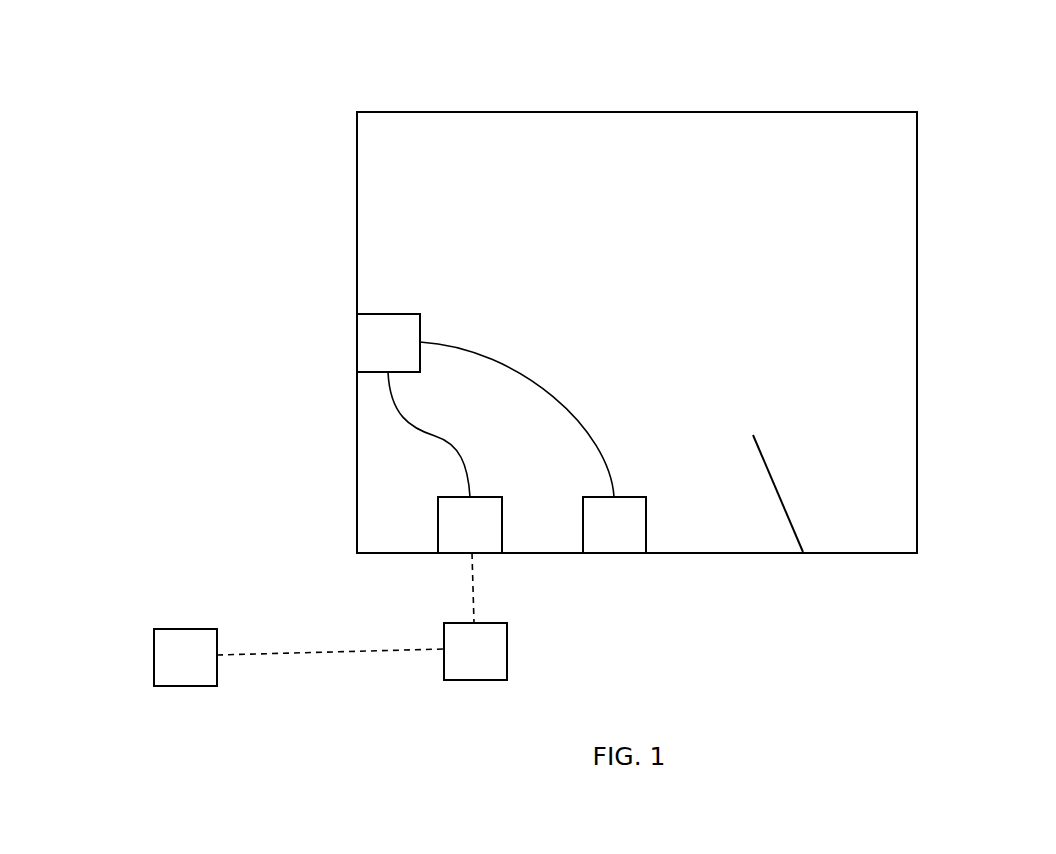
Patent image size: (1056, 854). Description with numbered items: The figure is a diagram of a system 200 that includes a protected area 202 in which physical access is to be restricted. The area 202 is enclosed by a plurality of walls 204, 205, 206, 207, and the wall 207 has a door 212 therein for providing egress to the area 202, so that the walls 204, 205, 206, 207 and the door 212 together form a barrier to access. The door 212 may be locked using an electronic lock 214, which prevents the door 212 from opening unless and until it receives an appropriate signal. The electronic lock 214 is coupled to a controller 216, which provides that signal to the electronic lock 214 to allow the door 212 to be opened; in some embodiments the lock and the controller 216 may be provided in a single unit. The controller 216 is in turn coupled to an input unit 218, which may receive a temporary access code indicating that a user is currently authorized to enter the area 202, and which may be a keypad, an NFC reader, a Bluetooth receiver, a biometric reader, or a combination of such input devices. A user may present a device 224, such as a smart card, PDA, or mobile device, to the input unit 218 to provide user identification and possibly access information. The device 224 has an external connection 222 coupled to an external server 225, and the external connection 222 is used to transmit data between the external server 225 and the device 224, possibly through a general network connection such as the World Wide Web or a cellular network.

The system 200 is at (1030, 120).
The protected area 202 is at (666, 250).
The wall 204 is at (917, 270).
The wall 205 is at (675, 112).
The wall 206 is at (357, 172).
The wall 207 is at (892, 553).
The door 212 is at (773, 482).
The electronic lock 214 is at (599, 536).
The controller 216 is at (373, 354).
The input unit 218 is at (455, 536).
The external connection 222 is at (293, 653).
The device 224 is at (460, 662).
The external server 225 is at (171, 668).